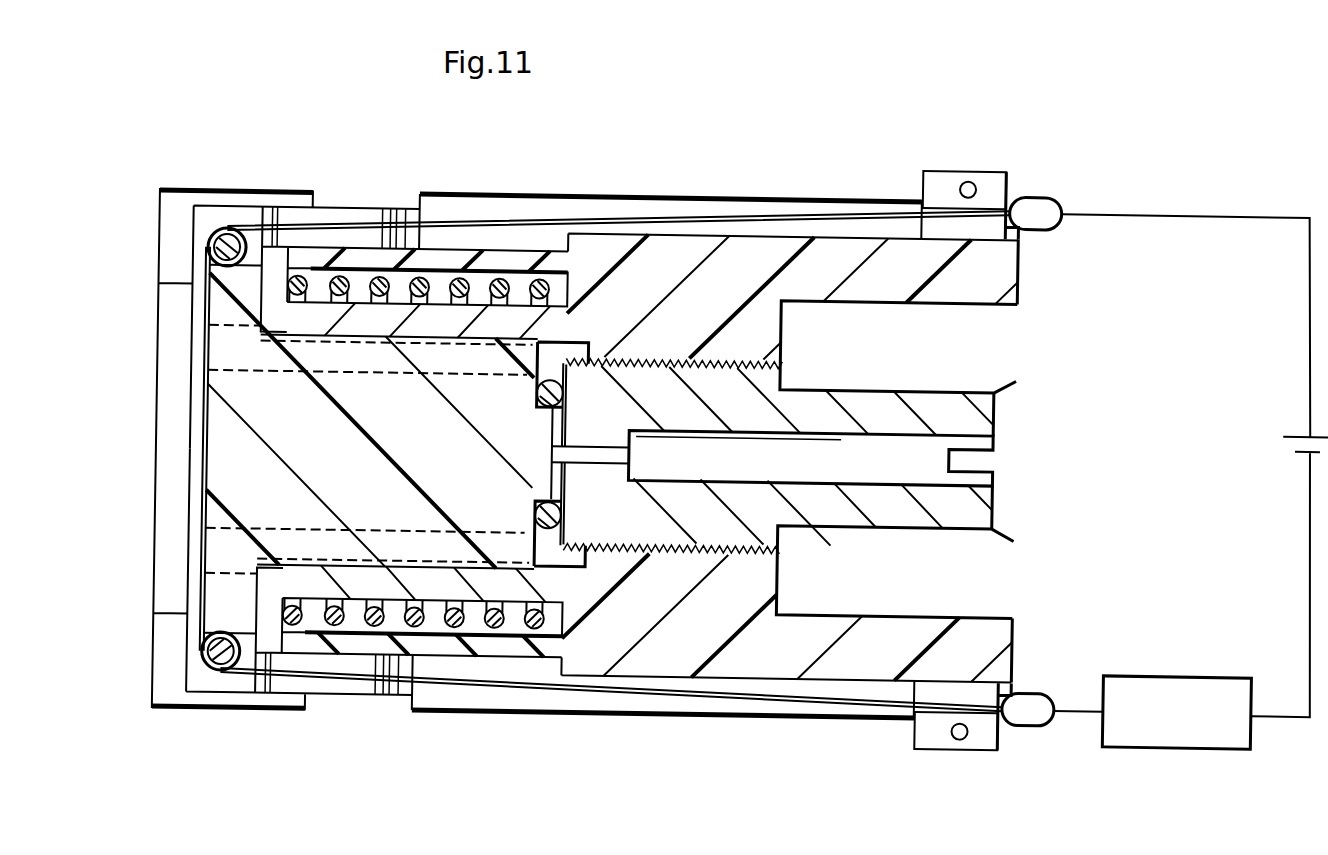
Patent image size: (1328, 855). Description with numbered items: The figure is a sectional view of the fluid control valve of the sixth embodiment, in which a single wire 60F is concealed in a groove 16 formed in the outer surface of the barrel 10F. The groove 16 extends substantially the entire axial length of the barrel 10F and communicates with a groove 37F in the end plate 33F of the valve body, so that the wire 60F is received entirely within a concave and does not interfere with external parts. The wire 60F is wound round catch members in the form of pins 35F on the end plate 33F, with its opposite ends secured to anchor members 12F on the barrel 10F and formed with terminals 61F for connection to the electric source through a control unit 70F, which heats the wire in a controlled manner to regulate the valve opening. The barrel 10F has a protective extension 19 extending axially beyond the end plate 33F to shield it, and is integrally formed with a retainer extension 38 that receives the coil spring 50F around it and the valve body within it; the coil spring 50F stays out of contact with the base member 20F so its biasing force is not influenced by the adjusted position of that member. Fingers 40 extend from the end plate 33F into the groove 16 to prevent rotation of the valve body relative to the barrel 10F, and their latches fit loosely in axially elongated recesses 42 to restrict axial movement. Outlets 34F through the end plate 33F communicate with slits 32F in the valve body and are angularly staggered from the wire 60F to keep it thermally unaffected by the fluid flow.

The barrel 10F is at (854, 197).
The anchor member 12F is at (1002, 171).
The groove 16 is at (695, 198).
The protective extension 19 is at (178, 206).
The base member 20F is at (1003, 389).
The slit 32F is at (365, 367).
The end plate 33F is at (228, 602).
The outlet 34F is at (228, 337).
The pin 35F is at (230, 231).
The groove 37F is at (195, 484).
The retainer extension 38 is at (502, 588).
The finger 40 is at (324, 214).
The recess 42 is at (406, 213).
The coil spring 50F is at (458, 287).
The wire 60F is at (553, 245).
The terminal 61F is at (1050, 203).
The control unit 70F is at (1208, 745).